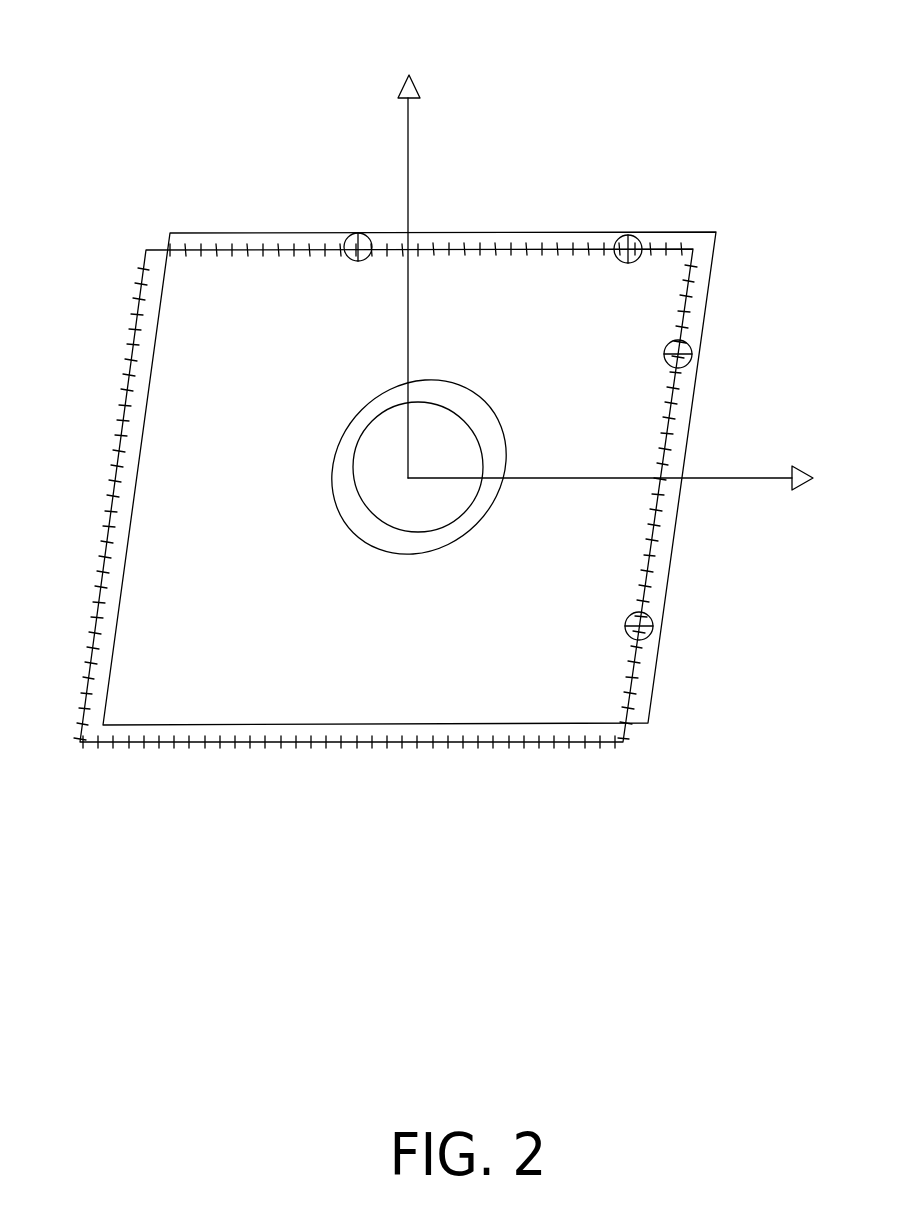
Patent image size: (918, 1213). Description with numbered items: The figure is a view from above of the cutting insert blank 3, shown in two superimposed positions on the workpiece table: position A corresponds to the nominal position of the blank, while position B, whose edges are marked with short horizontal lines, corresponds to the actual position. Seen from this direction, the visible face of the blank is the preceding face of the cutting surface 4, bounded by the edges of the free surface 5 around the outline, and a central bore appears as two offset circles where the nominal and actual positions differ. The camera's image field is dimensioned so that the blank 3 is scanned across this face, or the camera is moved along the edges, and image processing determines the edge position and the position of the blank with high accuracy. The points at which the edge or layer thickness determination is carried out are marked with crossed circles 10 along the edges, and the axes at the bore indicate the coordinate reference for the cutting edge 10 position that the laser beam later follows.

The cutting insert blank 3 is at (434, 458).
The cutting surface 4 is at (268, 372).
The free surface 5 is at (507, 245).
The cutting edge 10 is at (450, 242).
The nominal position A is at (648, 723).
The actual position B is at (593, 743).